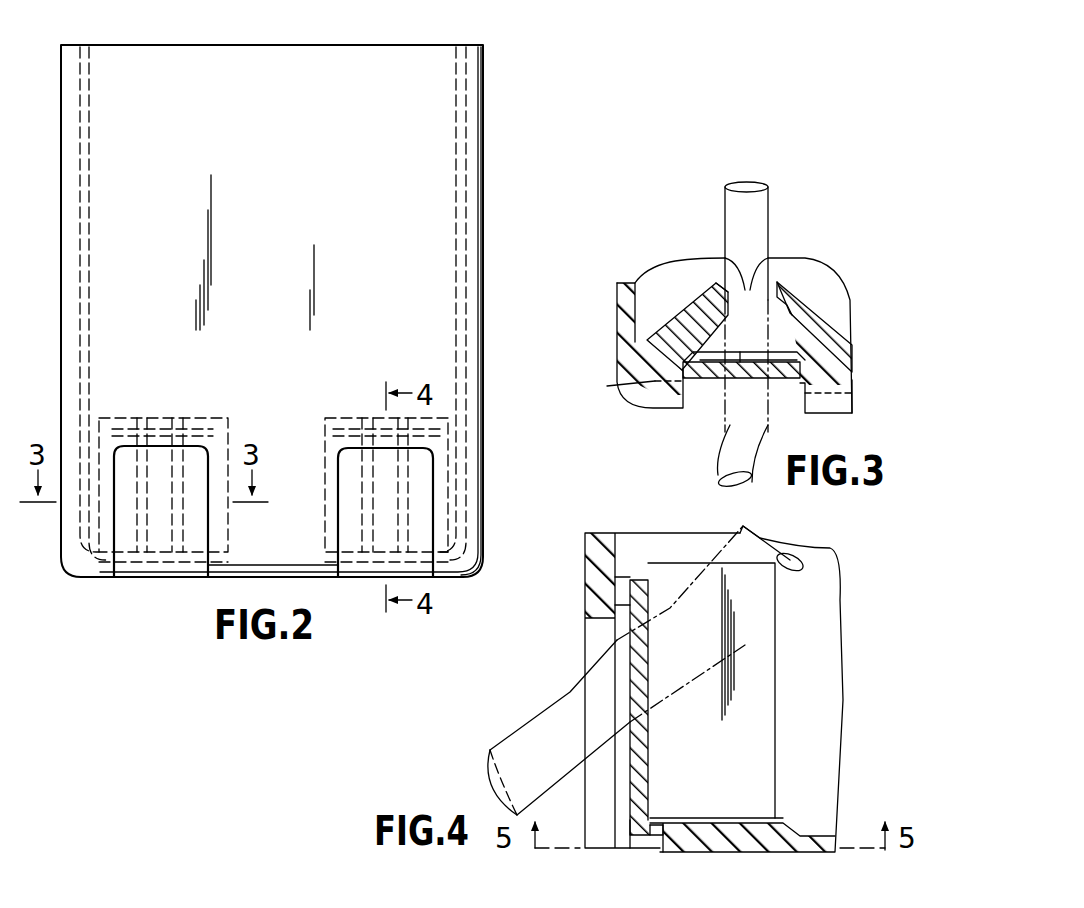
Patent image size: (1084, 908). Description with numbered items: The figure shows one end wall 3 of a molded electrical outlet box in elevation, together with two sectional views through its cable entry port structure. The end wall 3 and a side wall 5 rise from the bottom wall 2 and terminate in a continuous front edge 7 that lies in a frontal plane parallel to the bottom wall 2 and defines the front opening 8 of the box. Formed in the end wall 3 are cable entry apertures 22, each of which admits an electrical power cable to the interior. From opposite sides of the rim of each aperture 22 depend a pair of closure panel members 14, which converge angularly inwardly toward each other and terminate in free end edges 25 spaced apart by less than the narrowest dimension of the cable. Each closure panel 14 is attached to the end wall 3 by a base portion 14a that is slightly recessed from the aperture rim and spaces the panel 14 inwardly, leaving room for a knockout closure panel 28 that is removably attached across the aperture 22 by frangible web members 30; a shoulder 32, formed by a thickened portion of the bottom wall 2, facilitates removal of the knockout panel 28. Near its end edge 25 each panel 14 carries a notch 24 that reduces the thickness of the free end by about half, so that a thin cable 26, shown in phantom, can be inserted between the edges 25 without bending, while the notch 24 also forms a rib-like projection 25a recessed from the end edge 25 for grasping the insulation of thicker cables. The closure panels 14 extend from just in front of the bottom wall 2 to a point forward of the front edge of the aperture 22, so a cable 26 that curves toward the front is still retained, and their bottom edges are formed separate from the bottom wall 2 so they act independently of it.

In FIG. 4, the bottom wall 2 is at (812, 835).
In FIG. 2, the end wall 3 is at (442, 169).
In FIG. 3, the end wall 3 is at (853, 411).
In FIG. 4, the end wall 3 is at (595, 566).
In FIG. 4, the side wall 5 is at (808, 654).
In FIG. 2, the front edge 7 is at (472, 47).
In FIG. 2, the front opening 8 is at (236, 76).
In FIG. 2, the closure panel member 14 is at (126, 440).
In FIG. 3, the closure panel member 14 is at (668, 318).
In FIG. 4, the closure panel member 14 is at (775, 765).
In FIG. 3, the base portion 14a is at (712, 384).
In FIG. 2, the cable entry aperture 22 is at (205, 545).
In FIG. 4, the cable entry aperture 22 is at (606, 620).
In FIG. 3, the notch 24 is at (757, 296).
In FIG. 4, the notch 24 is at (743, 732).
In FIG. 3, the end edge 25 is at (740, 292).
In FIG. 4, the end edge 25 is at (775, 592).
In FIG. 3, the rib-like projection 25a is at (785, 312).
In FIG. 4, the rib-like projection 25a is at (756, 700).
In FIG. 3, the cable 26 is at (770, 218).
In FIG. 4, the cable 26 is at (530, 730).
In FIG. 2, the knockout closure panel 28 is at (184, 425).
In FIG. 4, the knockout closure panel 28 is at (648, 585).
In FIG. 2, the frangible web member 30 is at (150, 422).
In FIG. 3, the frangible web member 30 is at (803, 359).
In FIG. 4, the frangible web member 30 is at (622, 592).
In FIG. 3, the shoulder 32 is at (739, 358).
In FIG. 4, the shoulder 32 is at (656, 826).